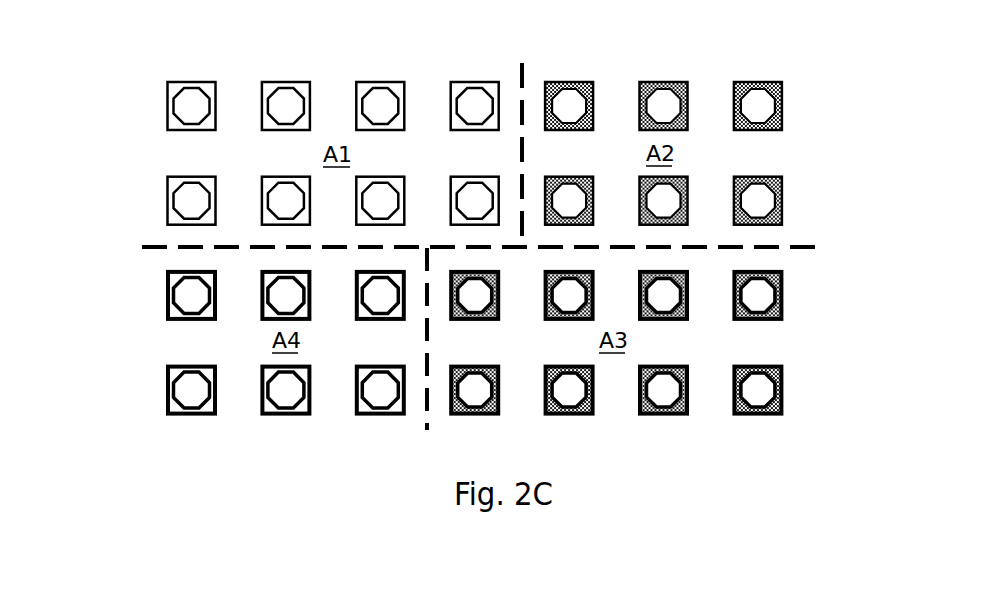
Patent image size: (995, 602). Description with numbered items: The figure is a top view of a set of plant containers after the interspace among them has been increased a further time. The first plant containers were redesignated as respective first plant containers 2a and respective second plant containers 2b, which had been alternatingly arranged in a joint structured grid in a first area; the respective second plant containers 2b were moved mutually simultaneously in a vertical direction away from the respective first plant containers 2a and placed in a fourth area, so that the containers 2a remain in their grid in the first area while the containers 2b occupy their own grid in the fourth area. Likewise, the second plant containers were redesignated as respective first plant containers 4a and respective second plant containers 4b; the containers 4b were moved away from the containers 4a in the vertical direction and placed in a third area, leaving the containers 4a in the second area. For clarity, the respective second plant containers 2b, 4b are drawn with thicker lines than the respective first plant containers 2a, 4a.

The respective first plant containers 2a is at (188, 103).
The respective first plant containers 4a is at (662, 107).
The respective second plant containers 2b is at (190, 387).
The respective second plant containers 4b is at (660, 397).